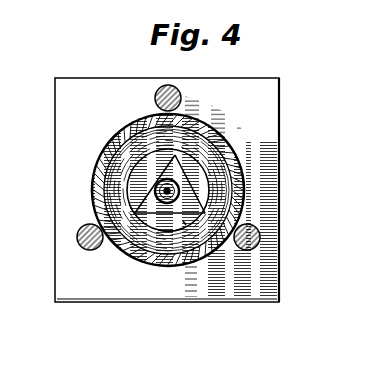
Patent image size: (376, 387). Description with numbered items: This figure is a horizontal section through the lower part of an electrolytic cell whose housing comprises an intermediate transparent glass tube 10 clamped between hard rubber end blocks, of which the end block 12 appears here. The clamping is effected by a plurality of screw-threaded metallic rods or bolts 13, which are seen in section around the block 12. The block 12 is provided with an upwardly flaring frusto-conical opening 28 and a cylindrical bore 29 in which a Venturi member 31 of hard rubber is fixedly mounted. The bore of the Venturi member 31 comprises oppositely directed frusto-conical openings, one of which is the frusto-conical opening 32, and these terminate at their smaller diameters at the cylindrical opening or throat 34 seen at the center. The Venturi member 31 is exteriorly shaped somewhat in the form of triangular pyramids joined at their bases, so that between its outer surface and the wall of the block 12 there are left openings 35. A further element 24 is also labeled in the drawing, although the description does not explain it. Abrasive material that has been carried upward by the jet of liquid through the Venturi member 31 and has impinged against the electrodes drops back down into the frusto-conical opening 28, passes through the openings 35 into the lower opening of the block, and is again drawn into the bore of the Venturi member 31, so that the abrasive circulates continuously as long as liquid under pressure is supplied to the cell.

The transparent glass tube 10 is at (248, 185).
The end block 12 is at (78, 86).
The screw-threaded metallic rods 13 is at (162, 86).
The spoke arm 24 is at (135, 213).
The frusto-conical opening 28 is at (190, 148).
The cylindrical bore 29 is at (169, 229).
The Venturi member 31 is at (202, 196).
The frusto-conical opening 32 is at (179, 185).
The throat 34 is at (236, 190).
The openings 35 is at (183, 220).